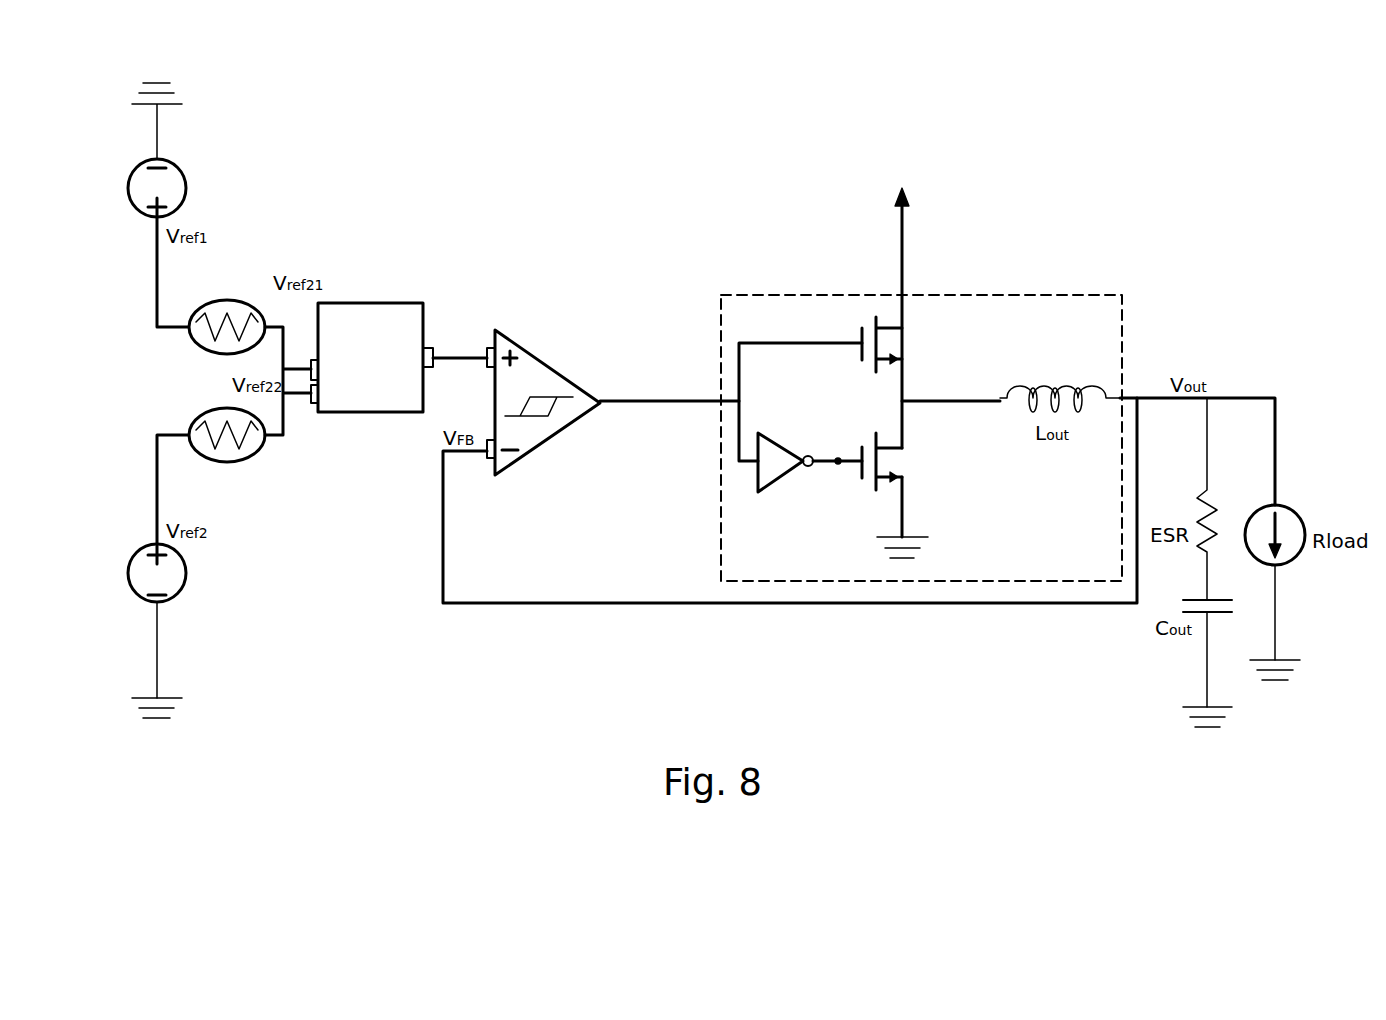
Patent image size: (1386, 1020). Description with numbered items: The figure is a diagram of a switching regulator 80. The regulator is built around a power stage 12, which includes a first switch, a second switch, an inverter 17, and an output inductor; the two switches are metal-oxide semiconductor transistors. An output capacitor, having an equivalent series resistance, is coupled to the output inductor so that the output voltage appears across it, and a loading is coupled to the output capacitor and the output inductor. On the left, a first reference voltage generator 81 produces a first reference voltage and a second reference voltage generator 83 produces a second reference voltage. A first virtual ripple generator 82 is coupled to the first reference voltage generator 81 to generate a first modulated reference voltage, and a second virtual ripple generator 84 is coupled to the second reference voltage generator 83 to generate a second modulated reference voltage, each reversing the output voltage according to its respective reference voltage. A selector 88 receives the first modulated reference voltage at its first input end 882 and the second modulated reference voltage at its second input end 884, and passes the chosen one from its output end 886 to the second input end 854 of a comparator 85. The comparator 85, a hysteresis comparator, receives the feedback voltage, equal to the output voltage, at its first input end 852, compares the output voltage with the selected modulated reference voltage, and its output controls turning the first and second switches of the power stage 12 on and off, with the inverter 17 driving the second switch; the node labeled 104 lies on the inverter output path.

The switching regulator 80 is at (1137, 193).
The first reference voltage generator 81 is at (186, 188).
The first virtual ripple generator 82 is at (226, 300).
The second reference voltage generator 83 is at (186, 573).
The second virtual ripple generator 84 is at (227, 462).
The comparator 85 is at (534, 403).
The selector 88 is at (352, 412).
The first input end of the selector 882 is at (312, 358).
The second input end of the selector 884 is at (314, 404).
The output end of the selector 886 is at (429, 347).
The first input end of the comparator 852 is at (491, 460).
The second input end of the comparator 854 is at (491, 347).
The power stage 12 is at (1123, 305).
The inverter 17 is at (783, 485).
The inverter output node 104 is at (838, 466).